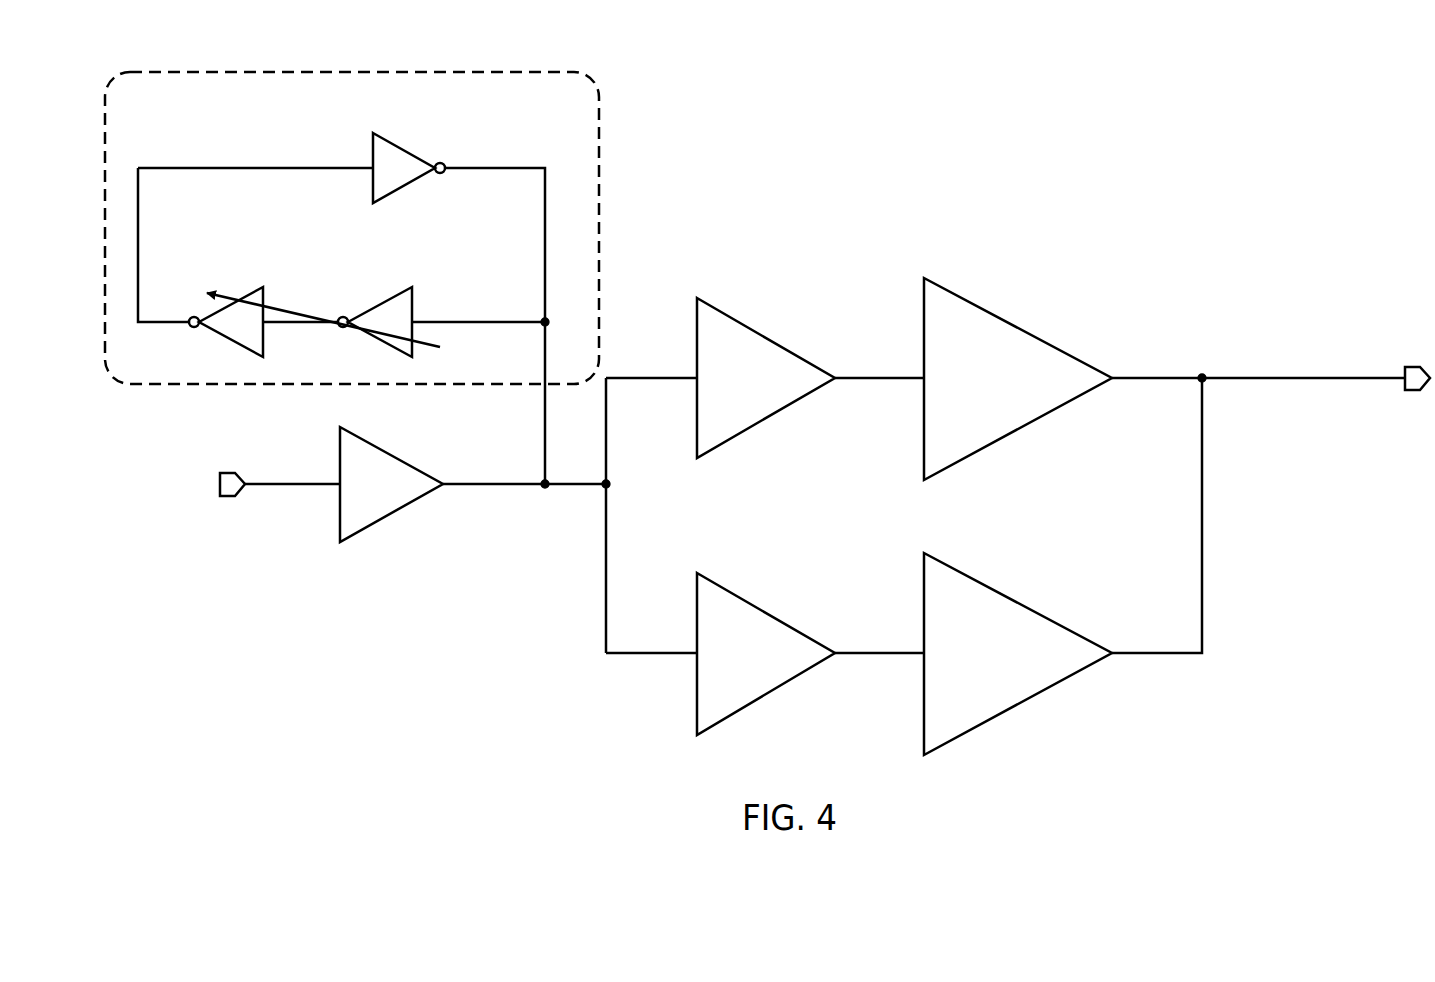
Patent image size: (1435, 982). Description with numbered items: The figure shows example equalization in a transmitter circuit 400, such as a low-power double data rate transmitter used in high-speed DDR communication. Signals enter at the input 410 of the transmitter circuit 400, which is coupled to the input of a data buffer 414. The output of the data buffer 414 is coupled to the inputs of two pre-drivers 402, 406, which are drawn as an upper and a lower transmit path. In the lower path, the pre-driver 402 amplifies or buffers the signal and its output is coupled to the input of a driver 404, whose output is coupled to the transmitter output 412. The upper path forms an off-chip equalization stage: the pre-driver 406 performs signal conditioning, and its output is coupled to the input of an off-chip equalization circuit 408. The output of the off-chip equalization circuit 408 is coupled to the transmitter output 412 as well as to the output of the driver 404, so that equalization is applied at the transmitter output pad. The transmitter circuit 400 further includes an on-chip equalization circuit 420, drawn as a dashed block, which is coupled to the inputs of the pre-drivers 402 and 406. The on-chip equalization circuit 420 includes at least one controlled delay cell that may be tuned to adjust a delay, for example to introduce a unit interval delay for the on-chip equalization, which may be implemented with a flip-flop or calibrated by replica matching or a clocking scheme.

The transmitter circuit 400 is at (1316, 134).
The pre-driver 402 is at (757, 605).
The driver 404 is at (1003, 593).
The pre-driver 406 is at (757, 328).
The off-chip equalization circuit 408 is at (1003, 317).
The input 410 is at (187, 505).
The transmitter output 412 is at (1320, 415).
The data buffer 414 is at (388, 516).
The on-chip equalization circuit 420 is at (353, 73).